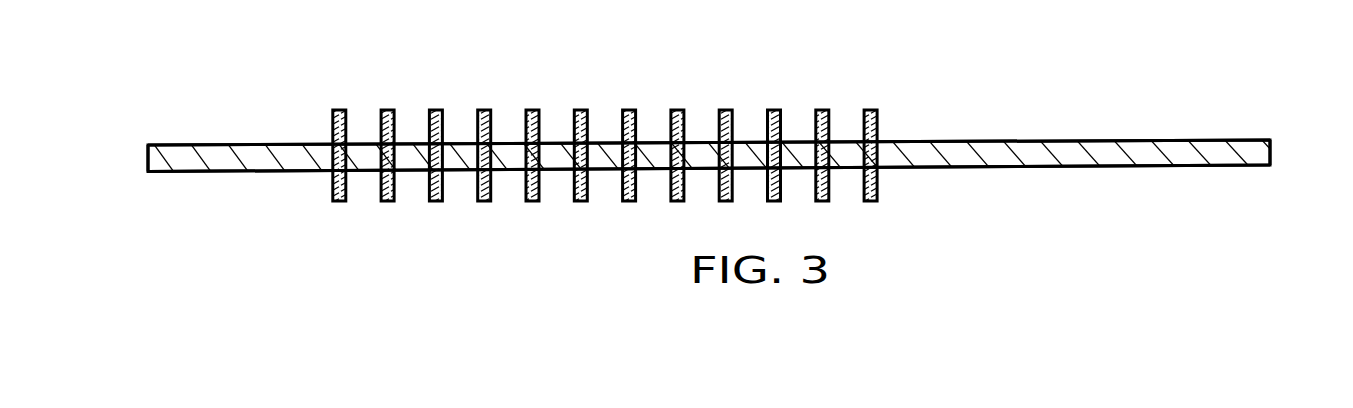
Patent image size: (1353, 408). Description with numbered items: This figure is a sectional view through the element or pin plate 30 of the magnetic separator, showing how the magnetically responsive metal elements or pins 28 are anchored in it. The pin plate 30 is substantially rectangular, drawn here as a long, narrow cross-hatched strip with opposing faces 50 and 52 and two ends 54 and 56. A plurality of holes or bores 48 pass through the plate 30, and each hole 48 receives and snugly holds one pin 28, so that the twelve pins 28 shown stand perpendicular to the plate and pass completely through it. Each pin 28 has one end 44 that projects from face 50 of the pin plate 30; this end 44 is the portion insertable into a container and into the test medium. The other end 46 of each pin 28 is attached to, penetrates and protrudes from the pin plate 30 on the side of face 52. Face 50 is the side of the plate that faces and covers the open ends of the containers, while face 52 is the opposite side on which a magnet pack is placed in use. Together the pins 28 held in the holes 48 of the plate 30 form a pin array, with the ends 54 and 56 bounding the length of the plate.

The pin 28 is at (436, 110).
The pin plate 30 is at (982, 141).
The one end of pin 44 is at (578, 201).
The other end of pin 46 is at (580, 110).
The hole 48 is at (592, 143).
The face 50 is at (948, 168).
The face 52 is at (930, 141).
The end 54 is at (1270, 148).
The end 56 is at (148, 155).